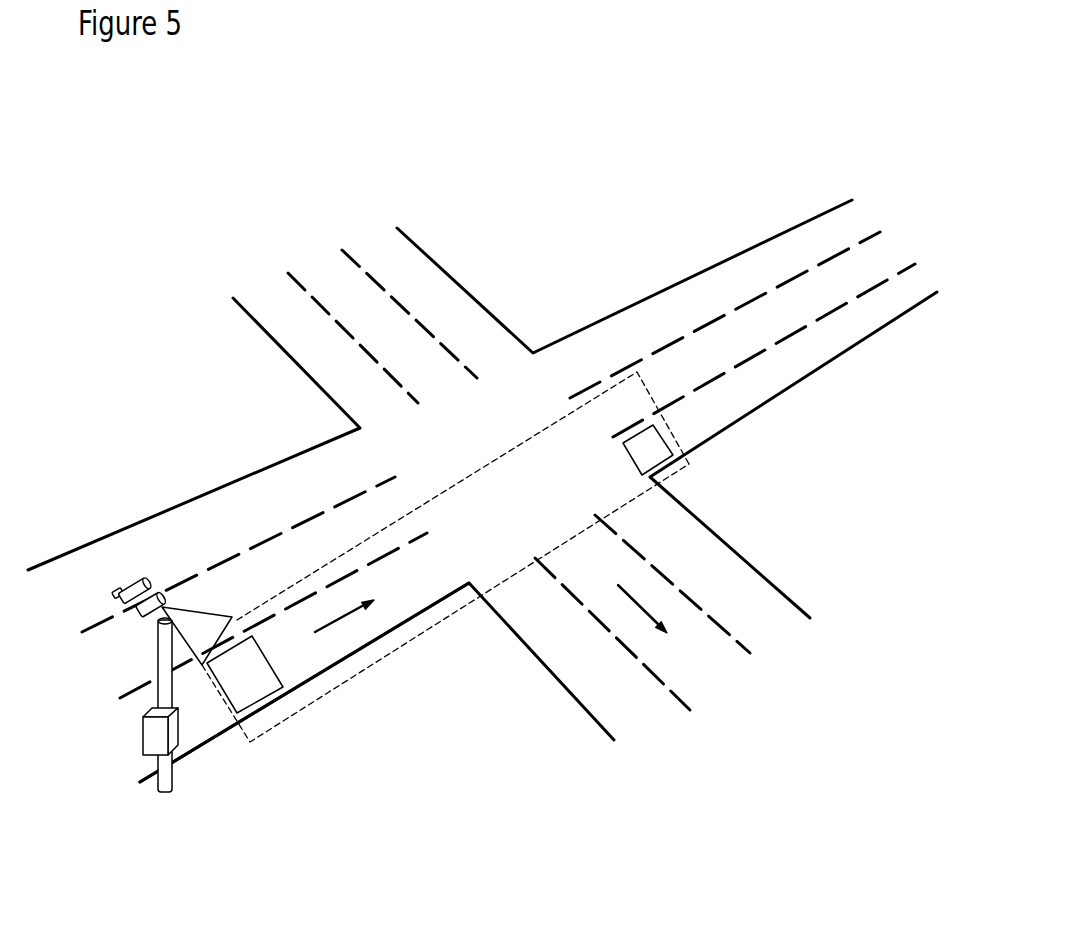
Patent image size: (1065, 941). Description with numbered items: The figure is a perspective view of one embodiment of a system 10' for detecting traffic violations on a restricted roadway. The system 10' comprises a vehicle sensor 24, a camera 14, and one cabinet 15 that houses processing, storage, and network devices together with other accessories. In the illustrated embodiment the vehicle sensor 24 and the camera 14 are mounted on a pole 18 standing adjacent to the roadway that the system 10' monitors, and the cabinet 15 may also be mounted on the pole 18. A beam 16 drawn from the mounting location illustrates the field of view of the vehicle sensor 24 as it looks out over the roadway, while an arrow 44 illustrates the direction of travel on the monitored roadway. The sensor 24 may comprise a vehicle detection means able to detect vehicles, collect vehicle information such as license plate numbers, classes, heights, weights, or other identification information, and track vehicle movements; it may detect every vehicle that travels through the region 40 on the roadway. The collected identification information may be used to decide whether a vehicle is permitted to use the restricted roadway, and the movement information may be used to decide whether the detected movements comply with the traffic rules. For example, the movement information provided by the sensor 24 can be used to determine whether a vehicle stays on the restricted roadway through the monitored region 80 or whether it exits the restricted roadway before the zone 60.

The system for detecting traffic violations on a restricted roadway 10' is at (482, 556).
The camera 14 is at (120, 598).
The cabinet 15 is at (178, 752).
The beam 16 is at (164, 609).
The pole 18 is at (165, 793).
The vehicle sensor 24 is at (142, 622).
The region 40 is at (262, 698).
The arrow 44 is at (345, 618).
The zone 60 is at (686, 462).
The monitored region 80 is at (672, 426).